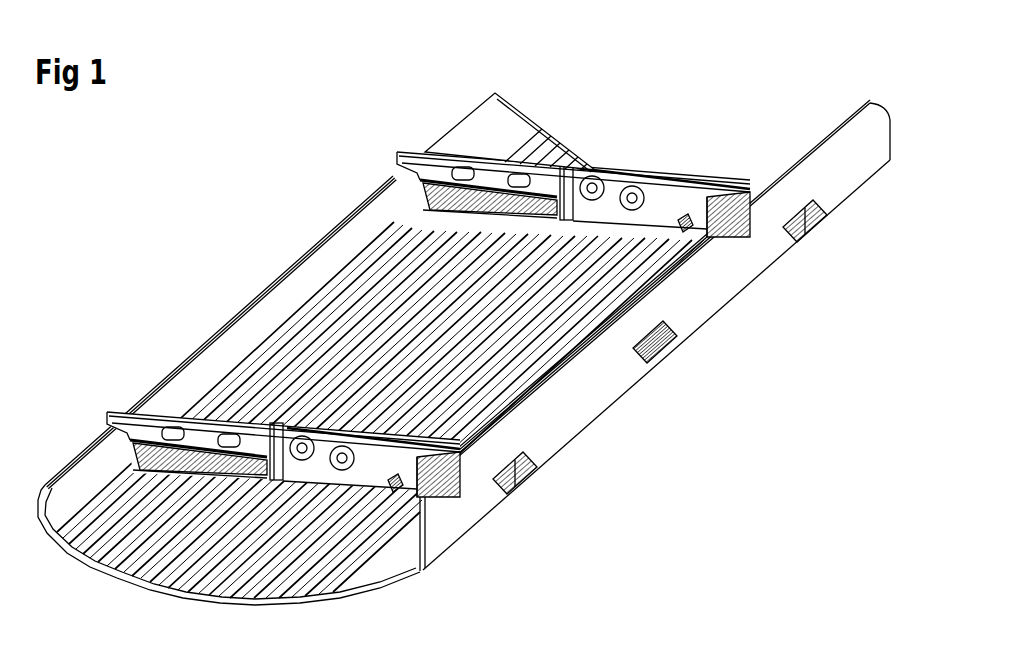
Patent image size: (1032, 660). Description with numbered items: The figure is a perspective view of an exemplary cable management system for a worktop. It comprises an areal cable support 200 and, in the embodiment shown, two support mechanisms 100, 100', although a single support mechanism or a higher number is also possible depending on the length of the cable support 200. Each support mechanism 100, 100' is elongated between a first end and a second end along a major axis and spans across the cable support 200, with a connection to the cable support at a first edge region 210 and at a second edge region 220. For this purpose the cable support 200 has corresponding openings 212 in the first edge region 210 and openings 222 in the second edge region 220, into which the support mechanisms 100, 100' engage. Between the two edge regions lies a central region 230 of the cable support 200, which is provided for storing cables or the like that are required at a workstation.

The support mechanism 100 is at (260, 427).
The support mechanism 100' is at (536, 168).
The cable support 200 is at (638, 399).
The first edge region 210 is at (515, 112).
The openings 212 is at (388, 175).
The second edge region 220 is at (867, 173).
The openings 222 is at (813, 232).
The central region 230 is at (395, 584).